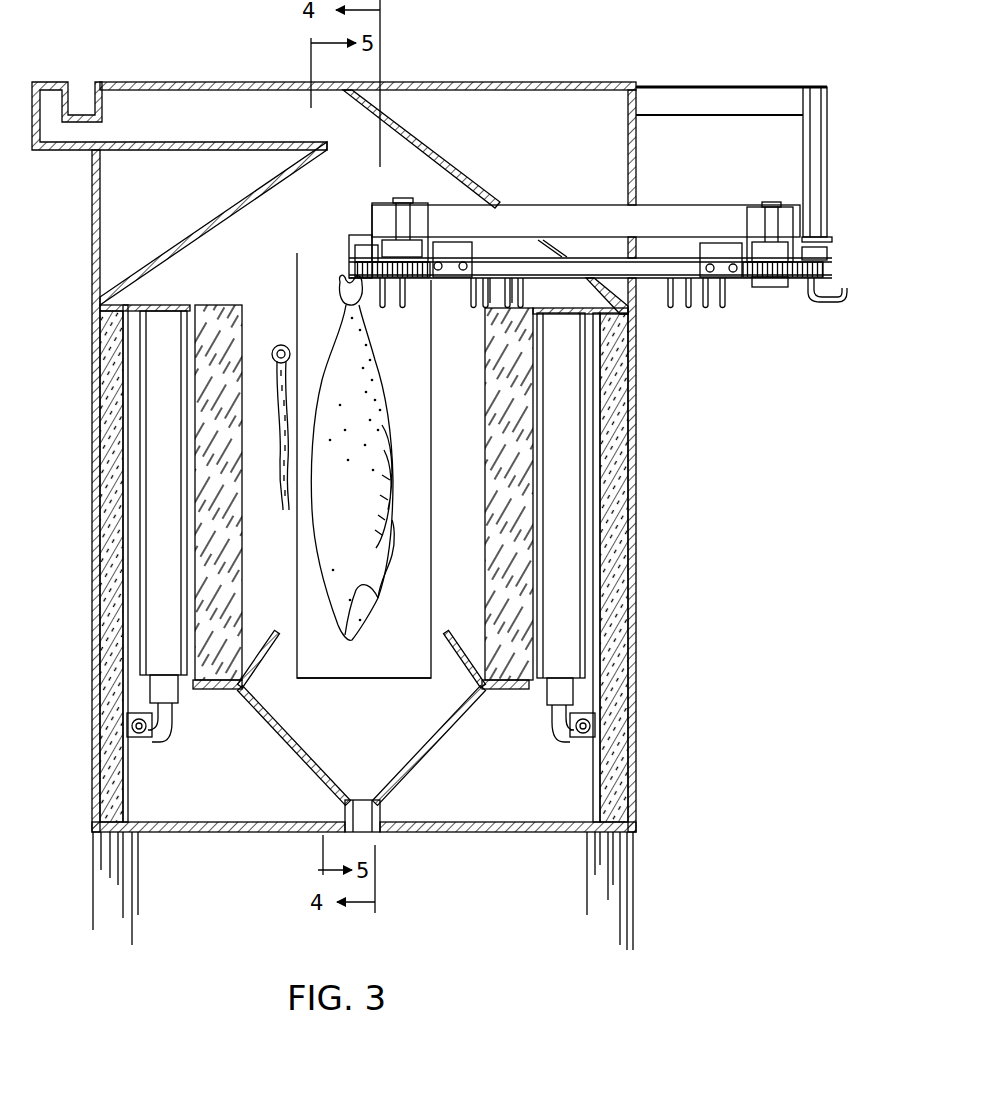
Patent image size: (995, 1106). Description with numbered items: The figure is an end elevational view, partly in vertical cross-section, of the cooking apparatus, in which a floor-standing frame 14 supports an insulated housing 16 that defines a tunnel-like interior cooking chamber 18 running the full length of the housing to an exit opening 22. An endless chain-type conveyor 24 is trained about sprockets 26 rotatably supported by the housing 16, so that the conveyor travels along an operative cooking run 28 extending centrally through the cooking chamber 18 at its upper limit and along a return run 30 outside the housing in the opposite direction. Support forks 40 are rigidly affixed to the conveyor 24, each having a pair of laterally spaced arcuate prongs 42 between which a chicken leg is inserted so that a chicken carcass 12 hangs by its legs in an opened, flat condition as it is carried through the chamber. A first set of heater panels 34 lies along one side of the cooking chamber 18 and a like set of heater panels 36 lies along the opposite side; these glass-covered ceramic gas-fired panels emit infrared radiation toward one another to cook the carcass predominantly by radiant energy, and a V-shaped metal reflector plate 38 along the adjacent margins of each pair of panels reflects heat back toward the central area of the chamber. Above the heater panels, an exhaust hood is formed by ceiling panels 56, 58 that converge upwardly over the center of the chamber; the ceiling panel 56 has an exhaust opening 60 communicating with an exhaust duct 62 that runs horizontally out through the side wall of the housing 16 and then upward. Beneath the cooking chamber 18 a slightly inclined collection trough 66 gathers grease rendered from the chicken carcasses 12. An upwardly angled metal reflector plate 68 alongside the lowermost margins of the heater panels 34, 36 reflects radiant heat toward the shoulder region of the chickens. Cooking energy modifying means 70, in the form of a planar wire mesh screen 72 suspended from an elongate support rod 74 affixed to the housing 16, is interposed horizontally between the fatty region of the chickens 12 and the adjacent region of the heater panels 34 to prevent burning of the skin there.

The chicken carcass 12 is at (383, 605).
The floor-standing frame 14 is at (613, 890).
The insulated housing 16 is at (633, 637).
The cooking chamber 18 is at (458, 424).
The exit opening 22 is at (408, 665).
The endless chain-type conveyor 24 is at (660, 265).
The sprocket 26 is at (790, 282).
The operative cooking run 28 is at (350, 258).
The return run 30 is at (833, 270).
The heater panel 34 is at (153, 508).
The heater panel 36 is at (570, 535).
The V-shaped metal reflector plate 38 is at (238, 505).
The support fork 40 is at (723, 300).
The arcuate prong 42 is at (845, 305).
The ceiling panel 56 is at (230, 216).
The ceiling panel 58 is at (437, 168).
The exhaust opening 60 is at (340, 128).
The exhaust duct 62 is at (72, 100).
The collection trough 66 is at (366, 800).
The upwardly angled metal reflector plate 68 is at (276, 630).
The cooking energy modifying means 70 is at (257, 382).
The wire mesh screen 72 is at (282, 495).
The support rod 74 is at (290, 357).